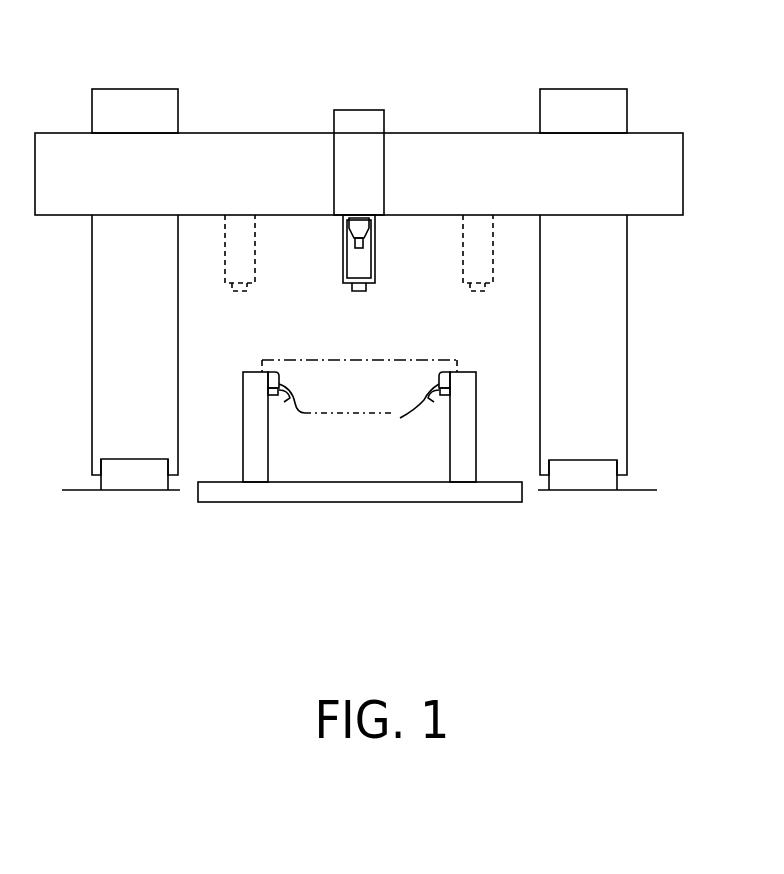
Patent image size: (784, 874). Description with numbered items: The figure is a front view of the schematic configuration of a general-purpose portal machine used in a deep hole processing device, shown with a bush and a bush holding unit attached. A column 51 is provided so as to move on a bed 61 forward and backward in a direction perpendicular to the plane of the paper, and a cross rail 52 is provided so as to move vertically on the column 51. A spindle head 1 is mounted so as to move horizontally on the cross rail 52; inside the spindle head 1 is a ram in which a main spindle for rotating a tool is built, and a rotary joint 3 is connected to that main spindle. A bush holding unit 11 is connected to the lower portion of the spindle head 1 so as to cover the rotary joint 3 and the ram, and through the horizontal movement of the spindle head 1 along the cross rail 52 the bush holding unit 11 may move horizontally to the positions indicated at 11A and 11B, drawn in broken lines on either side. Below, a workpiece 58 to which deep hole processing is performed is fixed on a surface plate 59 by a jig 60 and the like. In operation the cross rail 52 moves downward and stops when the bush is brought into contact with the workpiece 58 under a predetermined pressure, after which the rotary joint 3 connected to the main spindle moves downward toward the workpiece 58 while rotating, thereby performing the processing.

The spindle head 1 is at (360, 125).
The rotary joint 3 is at (348, 228).
The bush holding unit 11 is at (376, 258).
The bush holding unit position 11A is at (226, 270).
The bush holding unit position 11B is at (464, 270).
The column 51 is at (134, 97).
The cross rail 52 is at (659, 145).
The workpiece 58 is at (359, 362).
The surface plate 59 is at (369, 492).
The jig 60 is at (255, 474).
The bed 61 is at (132, 485).